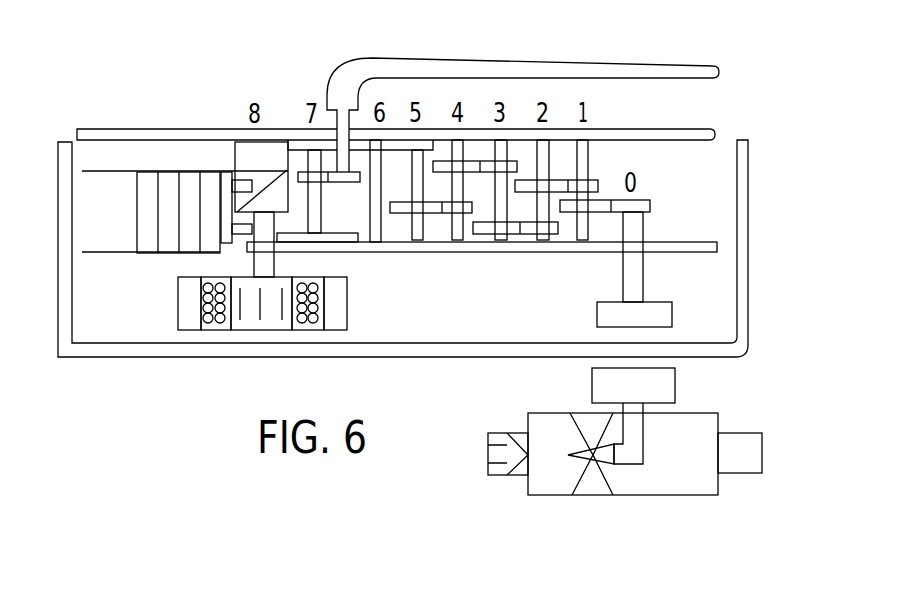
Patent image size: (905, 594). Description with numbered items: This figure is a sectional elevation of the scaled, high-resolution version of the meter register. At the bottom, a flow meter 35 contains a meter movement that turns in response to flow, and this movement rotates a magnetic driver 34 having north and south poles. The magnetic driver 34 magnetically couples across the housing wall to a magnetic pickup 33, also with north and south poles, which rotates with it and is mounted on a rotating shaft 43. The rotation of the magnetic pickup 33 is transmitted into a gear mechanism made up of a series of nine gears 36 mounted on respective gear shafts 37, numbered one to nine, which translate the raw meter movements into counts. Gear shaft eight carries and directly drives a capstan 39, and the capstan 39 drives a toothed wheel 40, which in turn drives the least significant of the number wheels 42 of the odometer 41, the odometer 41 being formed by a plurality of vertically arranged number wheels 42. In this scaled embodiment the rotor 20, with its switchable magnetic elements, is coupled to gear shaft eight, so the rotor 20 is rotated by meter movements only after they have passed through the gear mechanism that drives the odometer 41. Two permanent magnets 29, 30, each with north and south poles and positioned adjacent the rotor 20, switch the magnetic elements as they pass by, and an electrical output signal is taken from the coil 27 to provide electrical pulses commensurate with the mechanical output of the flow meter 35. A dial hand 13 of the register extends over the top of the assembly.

The dial hand 13 is at (528, 62).
The rotor 20 is at (252, 331).
The coil 27 is at (212, 331).
The permanent magnet 29 is at (340, 331).
The permanent magnet 30 is at (183, 333).
The magnetic pickup 33 is at (673, 317).
The magnetic driver 34 is at (675, 382).
The flow meter 35 is at (607, 470).
The gears 36 is at (600, 183).
The gear shafts 37 is at (589, 176).
The capstan 39 is at (275, 205).
The toothed wheel 40 is at (228, 252).
The odometer 41 is at (141, 158).
The number wheels 42 is at (213, 172).
The rotating shaft 43 is at (620, 268).